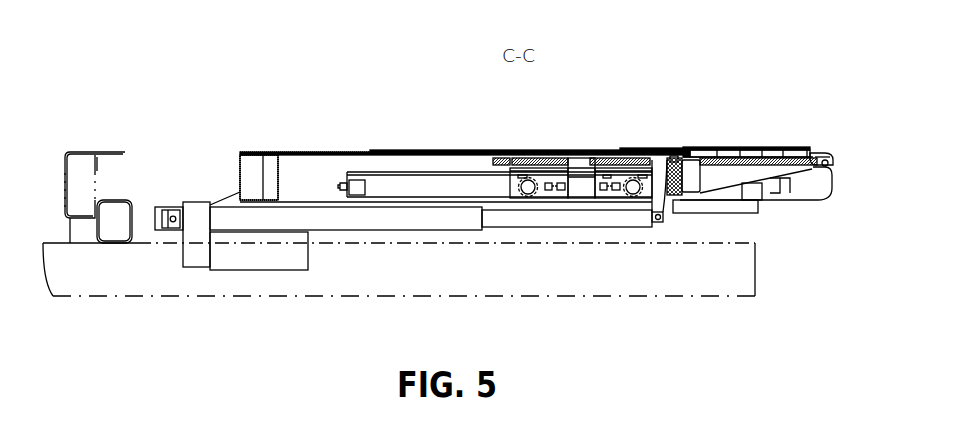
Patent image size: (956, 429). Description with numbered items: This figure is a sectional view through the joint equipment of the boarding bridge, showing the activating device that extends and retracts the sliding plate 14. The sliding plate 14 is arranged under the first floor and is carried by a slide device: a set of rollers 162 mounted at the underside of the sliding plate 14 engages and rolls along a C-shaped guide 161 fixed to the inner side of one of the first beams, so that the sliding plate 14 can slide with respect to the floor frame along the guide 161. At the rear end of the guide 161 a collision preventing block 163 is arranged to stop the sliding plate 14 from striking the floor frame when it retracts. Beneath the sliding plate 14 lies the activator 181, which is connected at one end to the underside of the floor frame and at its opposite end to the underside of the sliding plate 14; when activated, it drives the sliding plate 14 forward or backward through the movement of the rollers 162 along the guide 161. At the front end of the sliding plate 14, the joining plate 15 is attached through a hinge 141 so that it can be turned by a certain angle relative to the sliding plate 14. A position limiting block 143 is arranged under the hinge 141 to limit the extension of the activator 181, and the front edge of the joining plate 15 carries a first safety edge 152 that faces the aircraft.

The sliding plate 14 is at (586, 160).
The joining plate 15 is at (747, 164).
The hinge 141 is at (678, 158).
The position limiting block 143 is at (672, 200).
The first safety edge 152 is at (827, 160).
The guide 161 is at (410, 186).
The set of rollers 162 is at (618, 196).
The collision preventing block 163 is at (362, 178).
The activator 181 is at (463, 218).